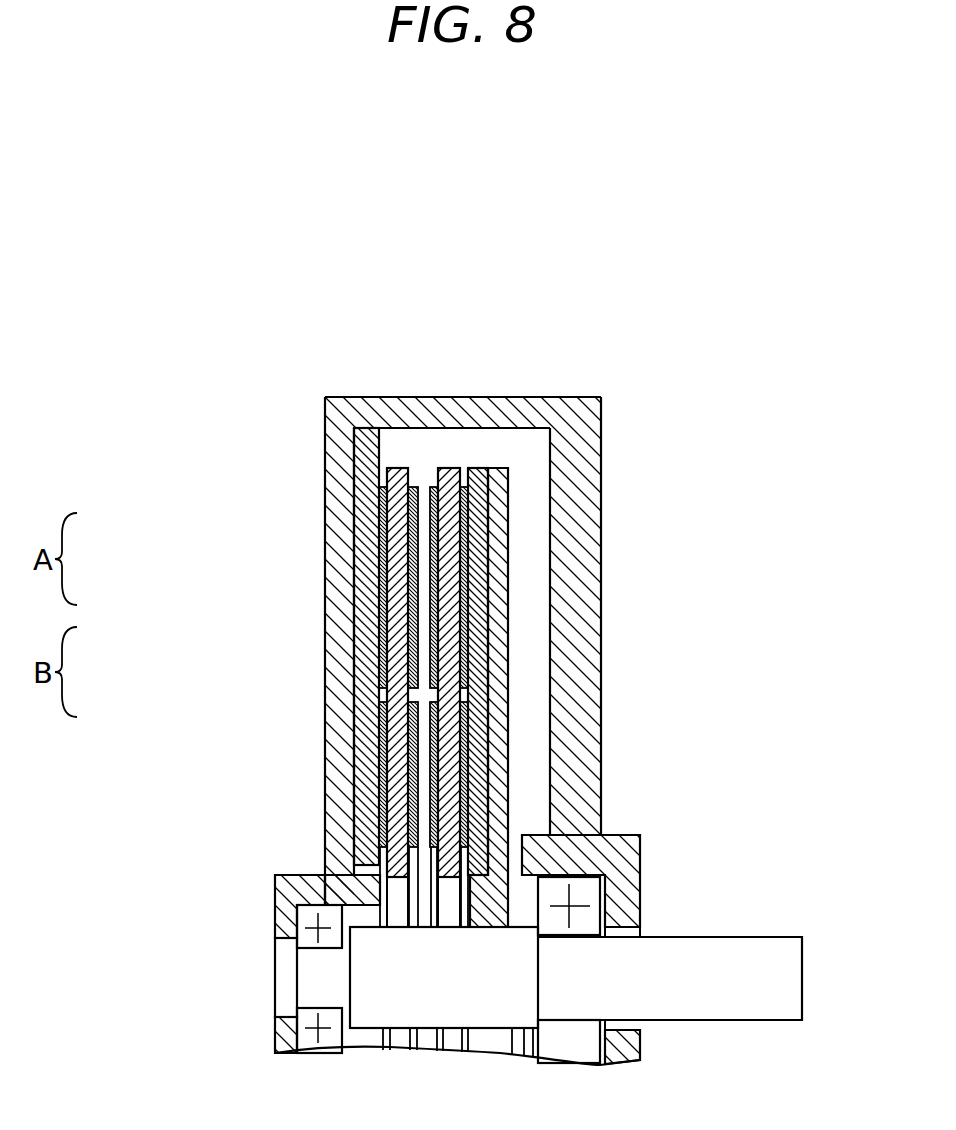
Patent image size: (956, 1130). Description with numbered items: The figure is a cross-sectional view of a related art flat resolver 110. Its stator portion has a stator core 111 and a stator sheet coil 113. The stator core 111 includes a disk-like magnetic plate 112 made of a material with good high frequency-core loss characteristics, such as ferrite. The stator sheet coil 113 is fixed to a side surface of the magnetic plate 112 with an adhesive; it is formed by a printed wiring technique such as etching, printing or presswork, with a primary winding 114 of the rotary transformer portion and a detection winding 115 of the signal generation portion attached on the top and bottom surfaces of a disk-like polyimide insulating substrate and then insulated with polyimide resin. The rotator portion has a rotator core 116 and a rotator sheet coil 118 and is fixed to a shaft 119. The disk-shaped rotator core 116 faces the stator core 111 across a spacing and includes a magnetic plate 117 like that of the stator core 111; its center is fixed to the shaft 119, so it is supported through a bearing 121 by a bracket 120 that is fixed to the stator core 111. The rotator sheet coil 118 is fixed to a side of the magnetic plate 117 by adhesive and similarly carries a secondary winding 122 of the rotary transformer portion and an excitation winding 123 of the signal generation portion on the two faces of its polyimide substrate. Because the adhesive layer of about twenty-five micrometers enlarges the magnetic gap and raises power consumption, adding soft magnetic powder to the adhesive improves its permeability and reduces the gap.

The motor 110 is at (767, 367).
The stator core 111 is at (336, 446).
The magnetic plate 112 is at (363, 432).
The stator sheet coil 113 is at (397, 468).
The primary winding 114 is at (395, 800).
The detection winding 115 is at (412, 530).
The rotator core 116 is at (508, 492).
The magnetic plate 117 is at (508, 432).
The rotator sheet coil 118 is at (448, 468).
The shaft 119 is at (747, 937).
The bracket 120 is at (562, 397).
The bearing 121 is at (291, 905).
The secondary winding 122 is at (462, 796).
The excitation winding 123 is at (462, 614).